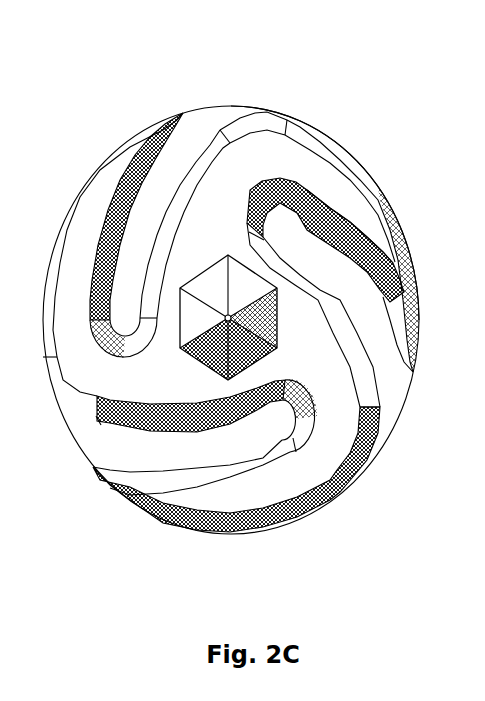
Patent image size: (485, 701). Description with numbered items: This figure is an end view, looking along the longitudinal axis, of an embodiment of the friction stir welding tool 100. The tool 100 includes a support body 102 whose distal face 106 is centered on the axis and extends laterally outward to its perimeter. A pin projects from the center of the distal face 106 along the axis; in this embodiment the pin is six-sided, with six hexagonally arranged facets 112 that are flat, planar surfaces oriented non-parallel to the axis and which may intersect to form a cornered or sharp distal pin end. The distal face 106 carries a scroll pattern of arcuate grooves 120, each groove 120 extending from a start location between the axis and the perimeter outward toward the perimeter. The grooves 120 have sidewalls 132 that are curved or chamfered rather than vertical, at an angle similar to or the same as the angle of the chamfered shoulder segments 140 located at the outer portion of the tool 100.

The tool 100 is at (77, 501).
The support body 102 is at (289, 76).
The distal face 106 is at (226, 194).
The facets 112 is at (214, 276).
The grooves 120 is at (153, 179).
The sidewalls 132 is at (323, 299).
The chamfered shoulder segments 140 is at (65, 236).